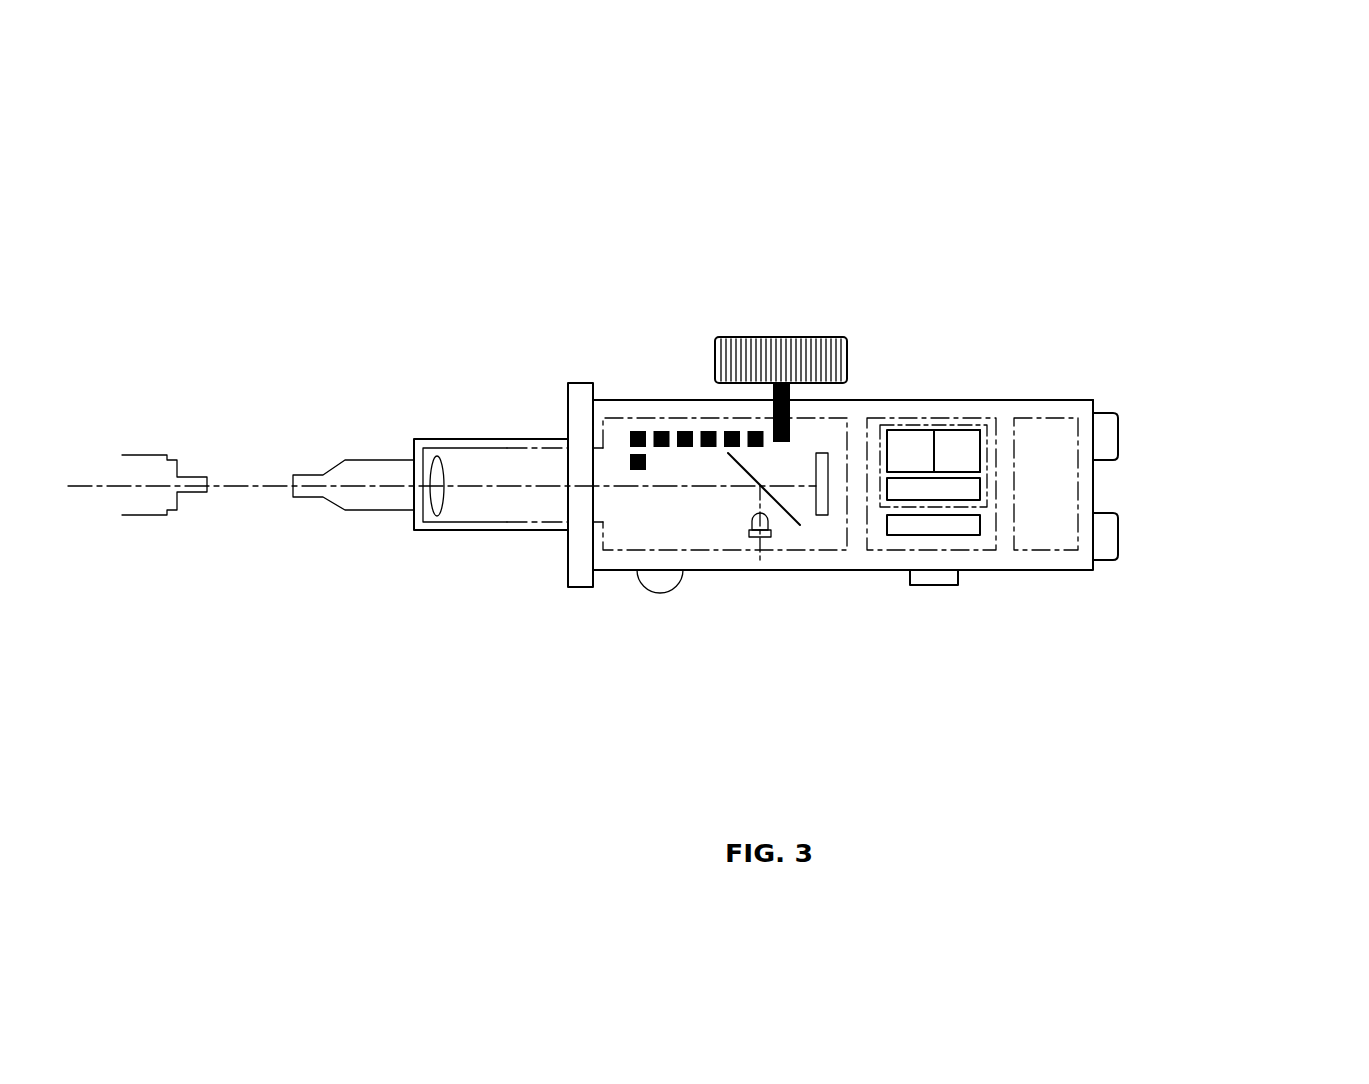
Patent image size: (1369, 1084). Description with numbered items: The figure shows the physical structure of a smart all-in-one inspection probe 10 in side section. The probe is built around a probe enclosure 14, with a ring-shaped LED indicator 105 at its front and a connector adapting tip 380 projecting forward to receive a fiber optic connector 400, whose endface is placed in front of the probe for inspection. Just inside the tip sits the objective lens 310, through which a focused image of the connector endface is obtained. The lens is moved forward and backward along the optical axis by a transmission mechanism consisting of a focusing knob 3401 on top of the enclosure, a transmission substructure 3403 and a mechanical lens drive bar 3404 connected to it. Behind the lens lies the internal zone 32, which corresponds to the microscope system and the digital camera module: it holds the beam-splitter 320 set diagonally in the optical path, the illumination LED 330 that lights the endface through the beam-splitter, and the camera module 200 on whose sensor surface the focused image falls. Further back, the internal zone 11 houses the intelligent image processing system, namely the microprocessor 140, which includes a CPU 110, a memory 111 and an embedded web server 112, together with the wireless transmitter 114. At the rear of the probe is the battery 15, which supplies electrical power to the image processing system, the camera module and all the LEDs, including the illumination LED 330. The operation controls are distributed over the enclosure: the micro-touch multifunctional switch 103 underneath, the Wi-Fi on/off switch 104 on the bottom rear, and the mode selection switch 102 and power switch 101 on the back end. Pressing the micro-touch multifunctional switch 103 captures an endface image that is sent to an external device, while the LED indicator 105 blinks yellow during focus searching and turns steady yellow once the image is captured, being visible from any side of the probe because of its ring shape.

The smart all-in-one inspection probe 10 is at (512, 250).
The probe enclosure 14 is at (623, 400).
The LED indicator 105 is at (577, 570).
The objective lens 310 is at (435, 478).
The connector adapting tip 380 is at (345, 497).
The fiber optic connector 400 is at (153, 495).
The internal zone 32 is at (630, 537).
The micro-touch multifunctional switch 103 is at (660, 592).
The transmission substructure 3403 is at (660, 430).
The mechanical lens drive bar 3404 is at (612, 347).
The focusing knob 3401 is at (773, 360).
The beam-splitter 320 is at (790, 517).
The illumination LED 330 is at (752, 537).
The camera module 200 is at (823, 500).
The internal zone 11 is at (940, 418).
The microprocessor 140 is at (987, 507).
The CPU 110 is at (913, 445).
The memory 111 is at (950, 440).
The embedded web server 112 is at (960, 485).
The wireless transmitter 114 is at (908, 525).
The battery 15 is at (1058, 440).
The mode selection switch 102 is at (1120, 420).
The power switch 101 is at (1118, 545).
The Wi-Fi on/off switch 104 is at (934, 585).